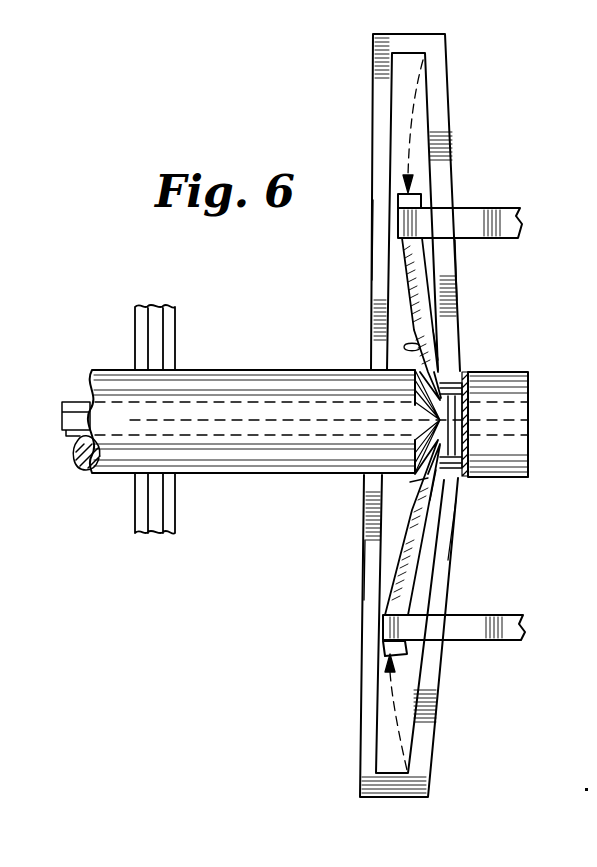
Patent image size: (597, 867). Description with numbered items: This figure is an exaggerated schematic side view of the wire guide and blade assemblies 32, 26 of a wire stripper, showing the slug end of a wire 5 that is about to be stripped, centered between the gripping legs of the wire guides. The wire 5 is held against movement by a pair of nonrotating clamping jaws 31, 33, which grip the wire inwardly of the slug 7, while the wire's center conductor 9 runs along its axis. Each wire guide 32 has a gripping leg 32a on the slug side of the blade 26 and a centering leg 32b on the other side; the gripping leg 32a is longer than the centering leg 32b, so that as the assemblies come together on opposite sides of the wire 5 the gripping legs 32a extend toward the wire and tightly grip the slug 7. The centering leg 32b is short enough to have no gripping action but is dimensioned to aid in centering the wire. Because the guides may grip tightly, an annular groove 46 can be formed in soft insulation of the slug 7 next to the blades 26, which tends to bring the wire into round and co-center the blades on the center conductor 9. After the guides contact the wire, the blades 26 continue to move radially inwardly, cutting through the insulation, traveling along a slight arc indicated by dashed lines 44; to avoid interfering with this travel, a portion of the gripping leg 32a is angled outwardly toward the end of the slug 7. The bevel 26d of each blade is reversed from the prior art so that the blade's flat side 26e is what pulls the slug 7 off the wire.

The wire 5 is at (240, 360).
The slug 7 is at (518, 485).
The center conductor 9 is at (498, 397).
The blade 26 is at (396, 287).
The bevel 26d is at (420, 347).
The flat side 26e is at (438, 332).
The clamping jaw 31 is at (140, 328).
The wire guide 32 is at (366, 97).
The gripping leg 32a is at (458, 266).
The centering leg 32b is at (372, 240).
The clamping jaw 33 is at (137, 508).
The dashed lines 44 is at (410, 123).
The annular groove 46 is at (466, 380).